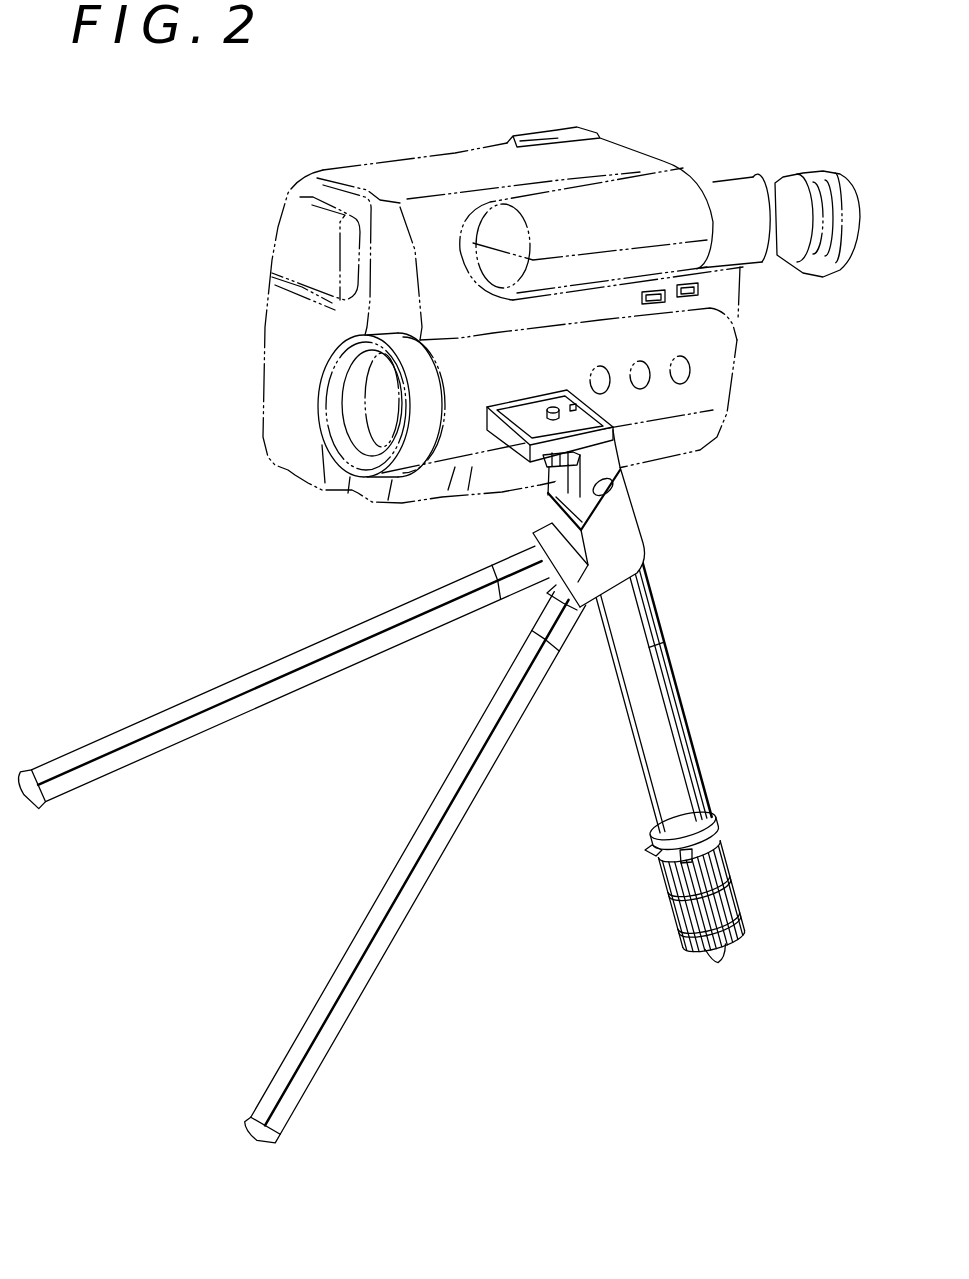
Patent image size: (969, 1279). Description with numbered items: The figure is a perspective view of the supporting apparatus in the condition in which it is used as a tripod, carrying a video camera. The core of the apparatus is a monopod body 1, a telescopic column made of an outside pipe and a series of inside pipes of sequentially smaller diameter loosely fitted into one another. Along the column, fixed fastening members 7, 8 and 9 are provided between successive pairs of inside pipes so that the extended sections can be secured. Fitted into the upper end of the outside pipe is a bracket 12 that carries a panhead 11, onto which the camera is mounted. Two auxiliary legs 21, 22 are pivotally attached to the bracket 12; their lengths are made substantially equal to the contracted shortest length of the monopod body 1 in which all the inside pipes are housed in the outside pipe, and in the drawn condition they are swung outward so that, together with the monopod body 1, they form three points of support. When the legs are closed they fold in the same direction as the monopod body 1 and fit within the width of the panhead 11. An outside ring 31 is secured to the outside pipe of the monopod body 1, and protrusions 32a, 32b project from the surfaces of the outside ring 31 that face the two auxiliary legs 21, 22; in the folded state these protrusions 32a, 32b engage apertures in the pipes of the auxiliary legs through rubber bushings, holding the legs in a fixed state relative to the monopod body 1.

The monopod body 1 is at (660, 643).
The panhead 11 is at (527, 413).
The bracket 12 is at (613, 525).
The auxiliary leg 21 is at (467, 790).
The auxiliary leg 22 is at (300, 653).
The outside ring 31 is at (717, 822).
The fixed fastening member 7 is at (727, 858).
The fixed fastening member 8 is at (673, 910).
The fixed fastening member 9 is at (733, 920).
The protrusion 32a is at (667, 870).
The protrusion 32b is at (643, 850).